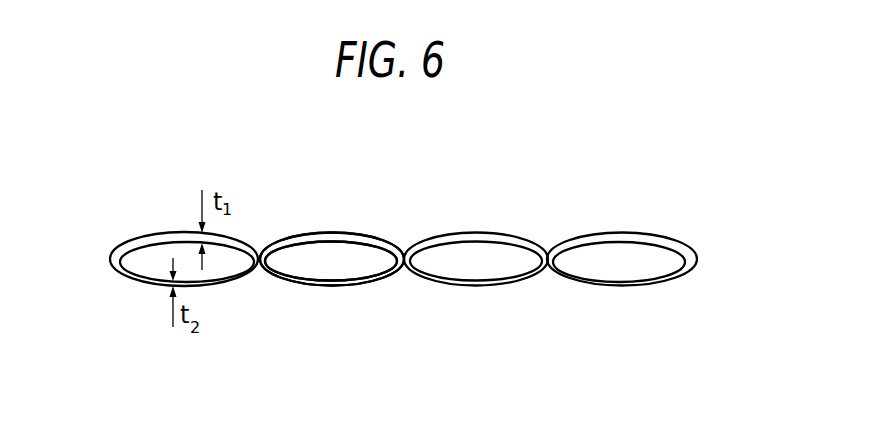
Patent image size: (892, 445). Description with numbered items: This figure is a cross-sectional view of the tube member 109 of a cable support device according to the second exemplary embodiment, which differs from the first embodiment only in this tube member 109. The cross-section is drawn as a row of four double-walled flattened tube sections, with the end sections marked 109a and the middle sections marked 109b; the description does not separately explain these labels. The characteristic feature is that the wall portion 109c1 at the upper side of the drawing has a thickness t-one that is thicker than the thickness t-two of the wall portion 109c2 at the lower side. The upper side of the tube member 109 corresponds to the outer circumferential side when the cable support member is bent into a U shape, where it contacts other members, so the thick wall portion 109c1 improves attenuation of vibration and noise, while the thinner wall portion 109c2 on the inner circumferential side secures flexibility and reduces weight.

The tube member 109 is at (496, 215).
The end tube 109a is at (147, 270).
The intermediate tube 109b is at (323, 268).
The wall portion 109c1 is at (378, 238).
The wall portion 109c2 is at (370, 282).